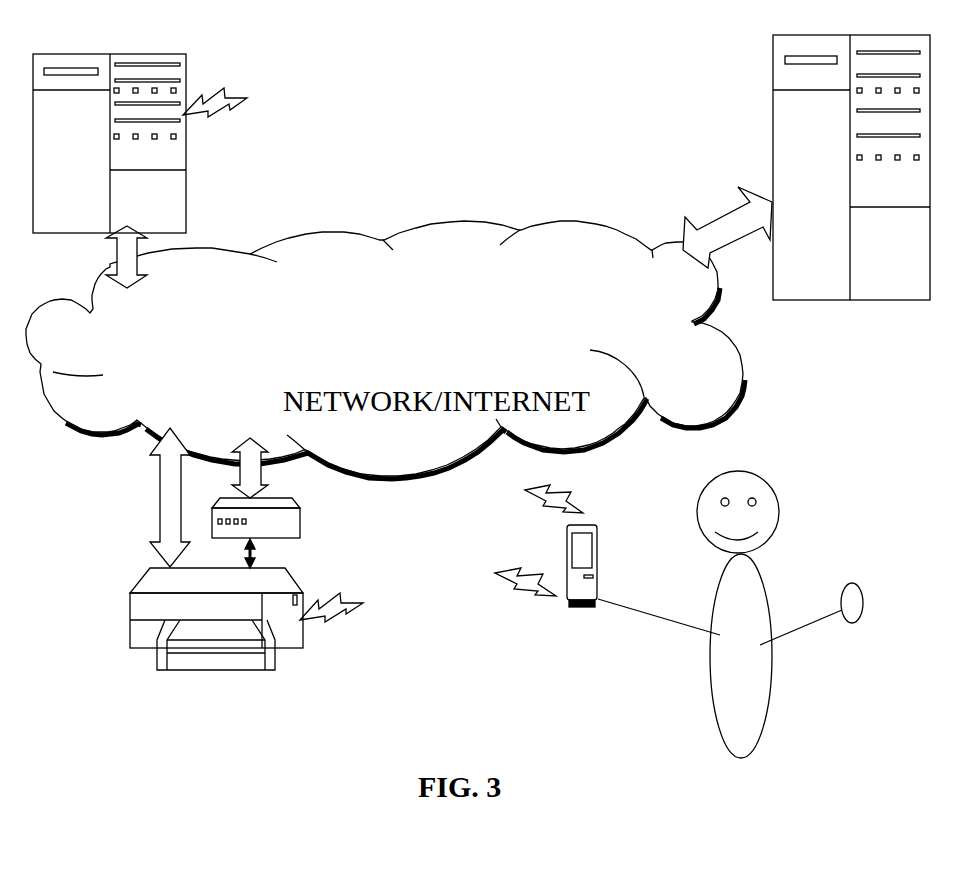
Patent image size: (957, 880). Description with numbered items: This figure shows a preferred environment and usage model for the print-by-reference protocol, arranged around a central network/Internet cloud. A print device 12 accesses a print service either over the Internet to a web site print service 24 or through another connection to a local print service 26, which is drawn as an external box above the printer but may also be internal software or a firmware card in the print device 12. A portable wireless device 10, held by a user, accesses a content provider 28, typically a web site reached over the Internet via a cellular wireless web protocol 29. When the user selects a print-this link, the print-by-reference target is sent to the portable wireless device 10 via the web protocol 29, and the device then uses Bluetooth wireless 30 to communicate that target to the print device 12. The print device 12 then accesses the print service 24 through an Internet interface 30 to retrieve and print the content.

The portable wireless device 10 is at (580, 607).
The print device 12 is at (130, 620).
The web site print service 24 is at (188, 143).
The local print service 26 is at (300, 522).
The content provider 28 is at (773, 168).
The cellular wireless web protocol 29 is at (568, 493).
The Bluetooth wireless 30 is at (232, 117).